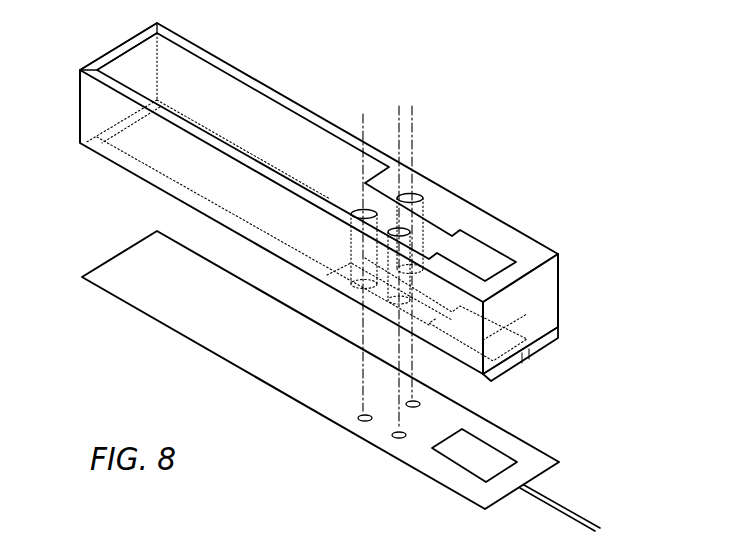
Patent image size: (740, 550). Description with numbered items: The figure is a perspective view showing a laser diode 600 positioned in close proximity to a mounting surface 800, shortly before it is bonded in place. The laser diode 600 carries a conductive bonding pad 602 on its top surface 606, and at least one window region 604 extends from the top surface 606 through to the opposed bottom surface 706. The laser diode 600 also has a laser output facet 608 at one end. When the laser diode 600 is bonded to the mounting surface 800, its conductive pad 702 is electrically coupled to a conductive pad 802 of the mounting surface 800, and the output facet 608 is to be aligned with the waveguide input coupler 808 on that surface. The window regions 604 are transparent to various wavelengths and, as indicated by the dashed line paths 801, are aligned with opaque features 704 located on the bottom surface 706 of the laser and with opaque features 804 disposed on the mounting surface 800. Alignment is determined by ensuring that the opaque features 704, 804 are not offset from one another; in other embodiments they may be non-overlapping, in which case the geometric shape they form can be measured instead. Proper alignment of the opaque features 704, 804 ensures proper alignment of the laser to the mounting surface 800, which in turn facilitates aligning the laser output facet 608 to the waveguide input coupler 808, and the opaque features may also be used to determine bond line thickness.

The laser diode 600 is at (246, 71).
The conductive bonding pad 602 is at (133, 59).
The window region 604 is at (403, 232).
The top surface 606 is at (553, 251).
The laser output facet 608 is at (528, 361).
The conductive pad 702 is at (168, 159).
The opaque feature 704 is at (365, 285).
The bottom surface 706 is at (95, 153).
The mounting surface 800 is at (100, 275).
The alignment axes 801 is at (415, 116).
The conductive pad 802 is at (496, 455).
The opaque feature 804 is at (397, 439).
The waveguide input coupler 808 is at (593, 517).